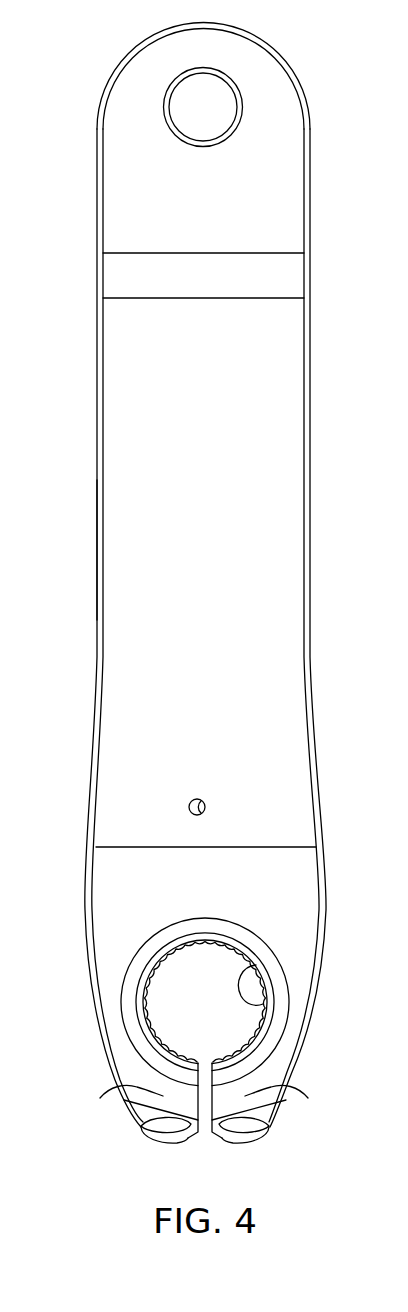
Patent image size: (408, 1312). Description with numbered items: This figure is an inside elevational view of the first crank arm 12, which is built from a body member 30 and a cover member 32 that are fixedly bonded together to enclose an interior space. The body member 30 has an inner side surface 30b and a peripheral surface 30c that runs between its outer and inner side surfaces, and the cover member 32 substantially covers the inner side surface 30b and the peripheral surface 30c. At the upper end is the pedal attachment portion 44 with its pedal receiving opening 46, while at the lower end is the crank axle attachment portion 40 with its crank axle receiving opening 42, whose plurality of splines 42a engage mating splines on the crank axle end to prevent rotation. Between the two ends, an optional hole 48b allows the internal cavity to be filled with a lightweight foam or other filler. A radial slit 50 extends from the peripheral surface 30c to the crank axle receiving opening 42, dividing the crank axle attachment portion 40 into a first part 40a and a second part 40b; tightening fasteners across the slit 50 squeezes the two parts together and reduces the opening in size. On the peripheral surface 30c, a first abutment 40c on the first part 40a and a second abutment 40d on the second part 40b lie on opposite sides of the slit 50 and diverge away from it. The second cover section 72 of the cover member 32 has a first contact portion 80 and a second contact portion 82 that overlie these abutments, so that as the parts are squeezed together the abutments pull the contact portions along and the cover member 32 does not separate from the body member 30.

The first crank arm 12 is at (76, 88).
The pedal attachment portion 44 is at (142, 122).
The pedal receiving opening 46 is at (210, 102).
The body member 30 is at (170, 244).
The inner side surface 30b is at (228, 503).
The peripheral surface 30c is at (103, 620).
The second cover section 72 is at (311, 444).
The cover member 32 is at (96, 553).
The hole 48b is at (204, 812).
The crank axle attachment portion 40 is at (120, 947).
The crank axle receiving opening 42 is at (186, 1015).
The splines 42a is at (244, 1000).
The first part 40a is at (125, 1087).
The second part 40b is at (290, 1088).
The first contact portion 80 is at (141, 1128).
The second contact portion 82 is at (269, 1125).
The first abutment 40c is at (186, 1143).
The second abutment 40d is at (225, 1143).
The slit 50 is at (207, 1146).